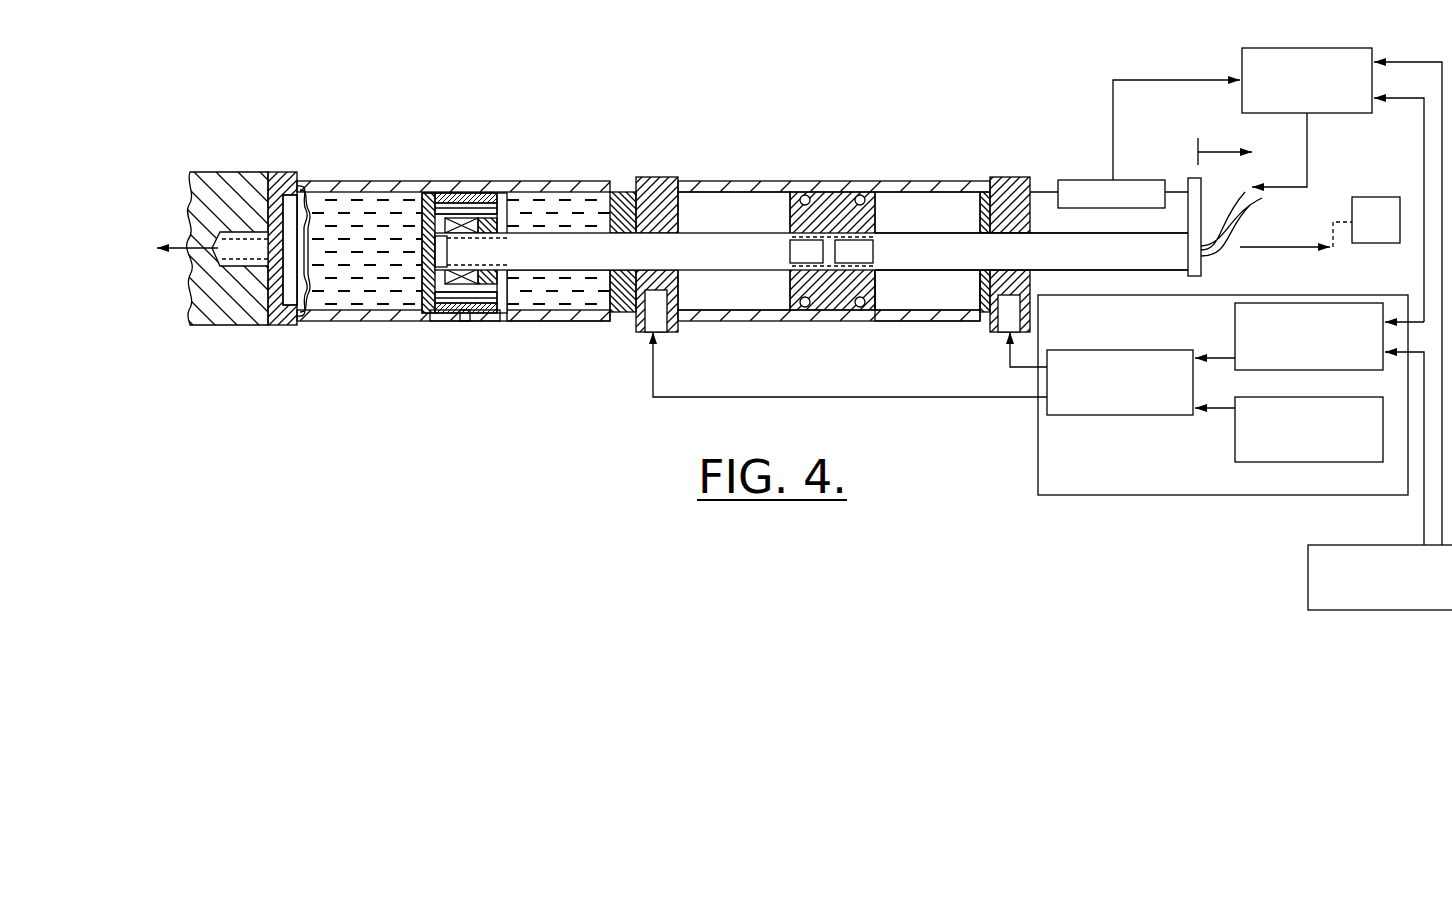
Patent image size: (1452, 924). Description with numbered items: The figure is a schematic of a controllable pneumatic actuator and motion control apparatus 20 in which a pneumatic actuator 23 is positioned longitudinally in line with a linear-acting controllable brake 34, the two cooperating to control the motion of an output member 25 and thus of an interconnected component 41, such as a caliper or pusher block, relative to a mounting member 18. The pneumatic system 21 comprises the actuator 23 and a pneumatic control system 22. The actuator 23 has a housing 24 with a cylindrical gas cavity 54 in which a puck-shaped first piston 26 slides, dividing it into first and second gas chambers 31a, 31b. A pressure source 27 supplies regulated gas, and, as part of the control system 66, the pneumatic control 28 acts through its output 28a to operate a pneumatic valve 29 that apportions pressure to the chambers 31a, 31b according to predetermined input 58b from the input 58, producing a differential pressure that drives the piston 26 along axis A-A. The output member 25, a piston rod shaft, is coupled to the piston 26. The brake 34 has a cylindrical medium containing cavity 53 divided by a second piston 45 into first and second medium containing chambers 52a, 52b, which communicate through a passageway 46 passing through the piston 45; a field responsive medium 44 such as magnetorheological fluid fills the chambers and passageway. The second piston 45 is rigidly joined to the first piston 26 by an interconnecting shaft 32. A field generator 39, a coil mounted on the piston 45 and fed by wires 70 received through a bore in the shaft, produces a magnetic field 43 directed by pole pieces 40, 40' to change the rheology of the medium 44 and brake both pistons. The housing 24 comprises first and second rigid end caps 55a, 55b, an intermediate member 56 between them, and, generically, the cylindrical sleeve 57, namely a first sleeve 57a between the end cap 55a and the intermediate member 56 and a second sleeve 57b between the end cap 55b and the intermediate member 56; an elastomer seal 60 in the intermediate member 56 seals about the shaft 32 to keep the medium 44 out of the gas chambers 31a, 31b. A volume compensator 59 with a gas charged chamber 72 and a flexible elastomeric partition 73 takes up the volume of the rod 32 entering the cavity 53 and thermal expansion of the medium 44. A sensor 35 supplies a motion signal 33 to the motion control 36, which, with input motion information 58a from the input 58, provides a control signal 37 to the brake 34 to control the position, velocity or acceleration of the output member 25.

The mounting member 18 is at (210, 172).
The controllable pneumatic actuator and motion control apparatus 20 is at (797, 313).
The pneumatic system 21 is at (1030, 414).
The pneumatic control system 22 is at (1185, 497).
The pneumatic actuator 23 is at (877, 251).
The housing 24 is at (757, 327).
The output member 25 is at (1142, 264).
The first piston 26 is at (836, 182).
The pressure source 27 is at (1235, 443).
The pneumatic control 28 is at (1237, 323).
The control signal line 28a is at (1217, 356).
The pneumatic valve 29 is at (1138, 415).
The first gas chamber 31a is at (752, 226).
The second gas chamber 31b is at (940, 226).
The interconnecting shaft 32 is at (573, 262).
The motion signal 33 is at (1167, 82).
The linear-acting controllable brake 34 is at (458, 260).
The sensor 35 is at (1132, 179).
The motion control 36 is at (1322, 48).
The control signal 37 is at (1307, 164).
The field generator 39 is at (462, 222).
The pole pieces 40 is at (456, 243).
The piston sleeve 40' is at (487, 276).
The interconnected component 41 is at (1377, 198).
The magnetic field 43 is at (487, 199).
The field responsive medium 44 is at (353, 298).
The second piston 45 is at (452, 324).
The passageway 46 is at (478, 323).
The first medium containing chamber 52a is at (388, 202).
The second medium containing chamber 52b is at (558, 197).
The medium containing cavity 53 is at (338, 210).
The gas cavity 54 is at (953, 195).
The first rigid end cap 55a is at (293, 264).
The second rigid end cap 55b is at (1022, 178).
The intermediate member 56 is at (630, 323).
The cylindrical sleeve 57 is at (1423, 118).
The first sleeve 57a is at (563, 318).
The second sleeve 57b is at (912, 317).
The input 58 is at (1308, 577).
The input motion information 58a is at (1440, 58).
The predetermined input 58b is at (1425, 532).
The volume compensator 59 is at (284, 278).
The elastomer seal 60 is at (633, 299).
The control system 66 is at (1176, 98).
The wires 70 is at (1245, 217).
The gas charged chamber 72 is at (290, 232).
The flexible elastomeric partition 73 is at (300, 214).